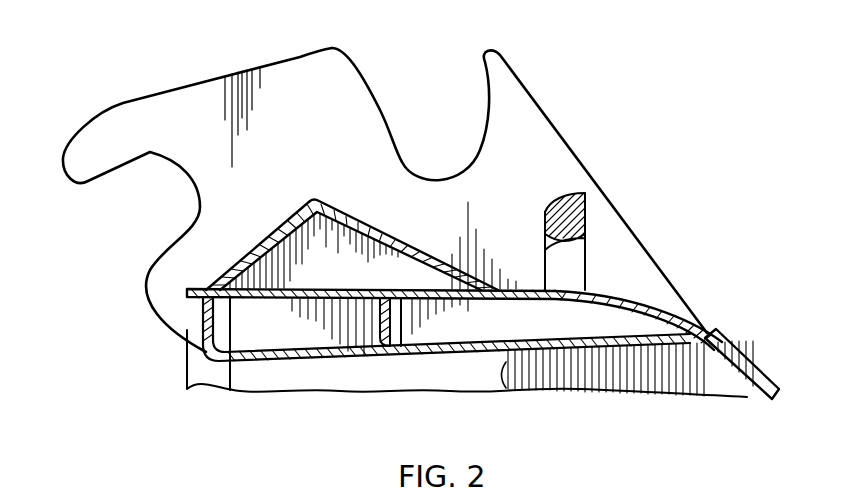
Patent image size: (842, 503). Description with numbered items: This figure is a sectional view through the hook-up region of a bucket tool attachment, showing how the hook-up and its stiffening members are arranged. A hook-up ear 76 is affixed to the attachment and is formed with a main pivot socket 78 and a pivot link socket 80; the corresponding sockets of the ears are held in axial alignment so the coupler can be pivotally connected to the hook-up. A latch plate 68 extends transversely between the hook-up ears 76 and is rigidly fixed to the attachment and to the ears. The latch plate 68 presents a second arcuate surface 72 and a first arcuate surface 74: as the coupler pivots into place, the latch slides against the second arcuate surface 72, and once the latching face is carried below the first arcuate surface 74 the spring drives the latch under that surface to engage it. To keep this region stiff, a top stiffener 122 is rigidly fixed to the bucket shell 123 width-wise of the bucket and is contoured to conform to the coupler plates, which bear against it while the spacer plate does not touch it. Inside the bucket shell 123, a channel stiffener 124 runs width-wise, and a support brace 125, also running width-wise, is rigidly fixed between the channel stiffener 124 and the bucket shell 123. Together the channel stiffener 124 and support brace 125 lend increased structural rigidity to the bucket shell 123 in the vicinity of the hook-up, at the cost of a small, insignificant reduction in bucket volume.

The latch plate 68 is at (573, 276).
The second arcuate surface 72 is at (546, 206).
The first arcuate surface 74 is at (545, 256).
The hook-up ear 76 is at (232, 72).
The main pivot socket 78 is at (150, 208).
The pivot link socket 80 is at (436, 122).
The top stiffener 122 is at (312, 198).
The bucket shell 123 is at (713, 330).
The channel stiffener 124 is at (286, 362).
The support brace 125 is at (504, 370).